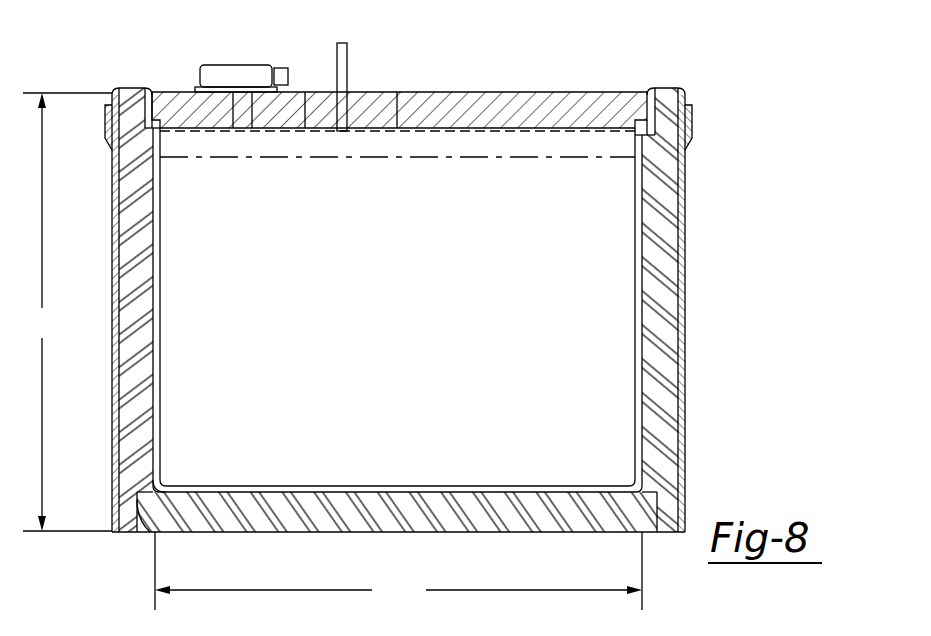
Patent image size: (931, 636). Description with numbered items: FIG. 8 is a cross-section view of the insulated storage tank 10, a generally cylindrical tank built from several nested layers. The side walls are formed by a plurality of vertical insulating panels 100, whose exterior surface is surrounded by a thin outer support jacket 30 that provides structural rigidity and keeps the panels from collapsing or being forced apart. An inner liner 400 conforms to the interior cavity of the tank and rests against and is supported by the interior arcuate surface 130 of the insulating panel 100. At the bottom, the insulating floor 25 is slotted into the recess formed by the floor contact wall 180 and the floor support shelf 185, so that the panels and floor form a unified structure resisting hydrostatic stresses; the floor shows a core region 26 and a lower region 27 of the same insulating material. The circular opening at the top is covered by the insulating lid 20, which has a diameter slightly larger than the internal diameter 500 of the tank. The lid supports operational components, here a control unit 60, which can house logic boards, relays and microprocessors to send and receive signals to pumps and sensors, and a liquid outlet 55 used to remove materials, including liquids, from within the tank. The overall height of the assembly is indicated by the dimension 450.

The insulated storage tank 10 is at (725, 415).
The insulating lid 20 is at (512, 100).
The insulating floor 25 is at (590, 495).
The floor core 26 is at (388, 495).
The floor bottom 27 is at (348, 532).
The outer support jacket 30 is at (112, 225).
The liquid outlet 55 is at (347, 58).
The control unit 60 is at (237, 72).
The insulating panel 100 is at (137, 283).
The interior arcuate surface 130 is at (150, 445).
The floor contact wall 180 is at (147, 533).
The floor support shelf 185 is at (150, 496).
The inner liner 400 is at (133, 88).
The height dimension 450 is at (67, 312).
The internal diameter 500 is at (398, 571).